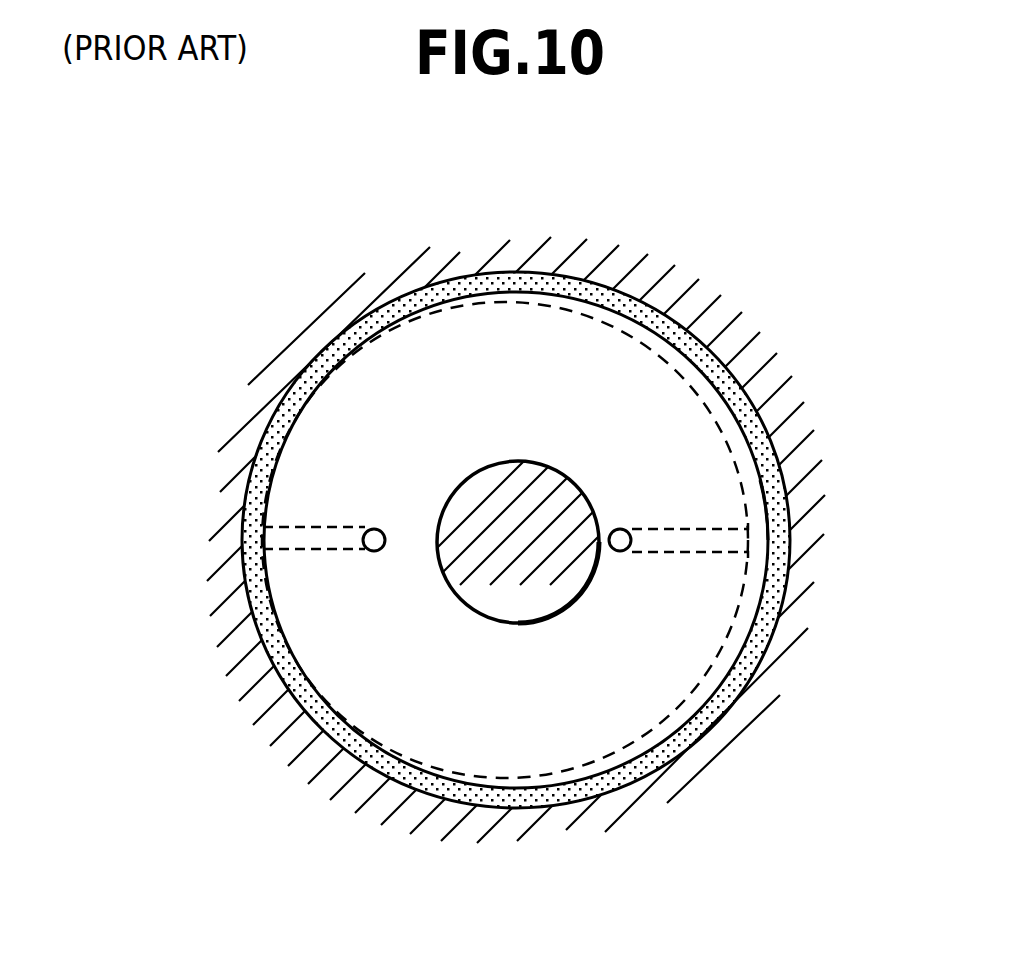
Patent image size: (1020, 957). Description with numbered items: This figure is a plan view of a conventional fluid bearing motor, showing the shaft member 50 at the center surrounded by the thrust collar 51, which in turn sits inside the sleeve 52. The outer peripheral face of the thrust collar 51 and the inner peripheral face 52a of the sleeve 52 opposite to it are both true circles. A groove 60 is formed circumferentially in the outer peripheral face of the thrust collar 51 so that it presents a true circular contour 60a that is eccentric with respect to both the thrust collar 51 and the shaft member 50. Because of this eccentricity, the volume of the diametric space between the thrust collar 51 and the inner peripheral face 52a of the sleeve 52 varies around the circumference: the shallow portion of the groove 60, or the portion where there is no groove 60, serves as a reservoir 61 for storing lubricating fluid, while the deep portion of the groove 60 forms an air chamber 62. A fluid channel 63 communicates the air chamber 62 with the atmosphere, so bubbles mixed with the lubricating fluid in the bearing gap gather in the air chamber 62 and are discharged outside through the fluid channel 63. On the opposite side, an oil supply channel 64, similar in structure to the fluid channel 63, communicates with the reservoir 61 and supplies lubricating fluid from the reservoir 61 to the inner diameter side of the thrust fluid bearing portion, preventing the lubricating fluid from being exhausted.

The shaft member 50 is at (523, 478).
The thrust collar 51 is at (528, 318).
The sleeve 52 is at (690, 763).
The inner peripheral face 52a is at (453, 284).
The groove 60 is at (757, 592).
The true circular contour 60a is at (712, 404).
The reservoir 61 is at (243, 536).
The air chamber 62 is at (762, 543).
The fluid channel 63 is at (693, 529).
The oil supply channel 64 is at (337, 551).